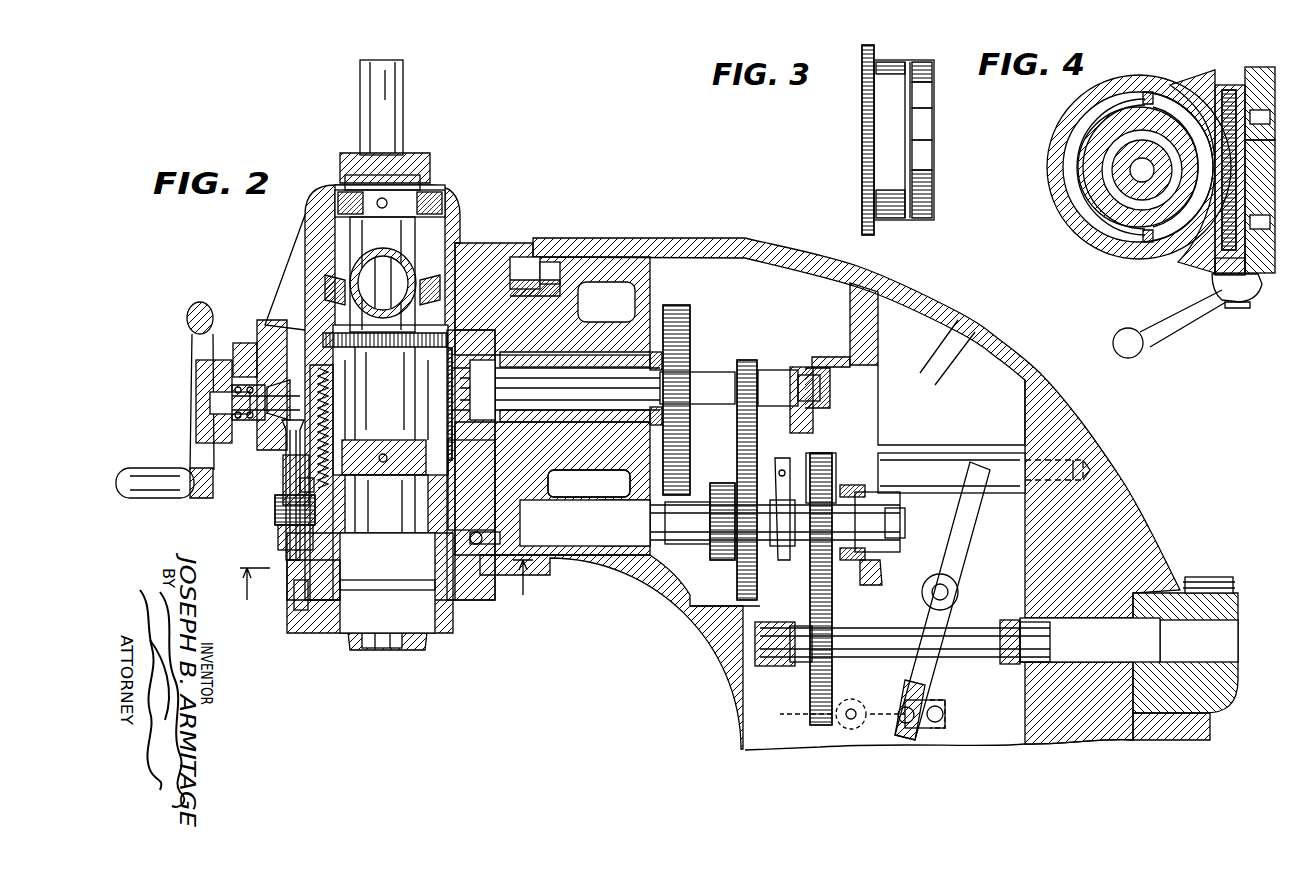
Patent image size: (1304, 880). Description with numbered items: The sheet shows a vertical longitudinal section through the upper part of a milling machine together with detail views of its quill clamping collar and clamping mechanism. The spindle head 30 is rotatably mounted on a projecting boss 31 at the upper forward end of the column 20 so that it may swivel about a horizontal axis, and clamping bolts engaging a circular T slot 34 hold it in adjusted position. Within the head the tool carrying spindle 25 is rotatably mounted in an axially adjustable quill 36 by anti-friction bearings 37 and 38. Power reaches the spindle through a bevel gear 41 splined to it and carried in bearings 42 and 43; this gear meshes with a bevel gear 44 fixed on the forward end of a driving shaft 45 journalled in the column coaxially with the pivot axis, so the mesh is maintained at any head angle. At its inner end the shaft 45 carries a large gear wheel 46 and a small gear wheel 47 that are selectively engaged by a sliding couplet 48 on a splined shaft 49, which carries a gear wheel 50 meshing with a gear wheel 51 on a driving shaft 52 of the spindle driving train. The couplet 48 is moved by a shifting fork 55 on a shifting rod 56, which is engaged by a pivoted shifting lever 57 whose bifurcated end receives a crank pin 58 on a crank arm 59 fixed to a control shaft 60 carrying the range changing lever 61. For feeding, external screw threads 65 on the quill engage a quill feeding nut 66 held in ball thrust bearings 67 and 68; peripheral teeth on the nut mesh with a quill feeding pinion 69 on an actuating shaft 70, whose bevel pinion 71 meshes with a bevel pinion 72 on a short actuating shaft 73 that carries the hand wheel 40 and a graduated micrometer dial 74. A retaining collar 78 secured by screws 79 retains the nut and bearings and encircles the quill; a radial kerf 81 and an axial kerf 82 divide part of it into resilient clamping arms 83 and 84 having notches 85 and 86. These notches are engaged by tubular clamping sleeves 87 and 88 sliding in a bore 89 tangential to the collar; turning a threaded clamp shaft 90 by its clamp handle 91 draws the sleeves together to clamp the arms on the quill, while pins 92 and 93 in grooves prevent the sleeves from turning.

In FIG. 2, the column 20 is at (945, 342).
In FIG. 2, the tool carrying spindle 25 is at (425, 643).
In FIG. 4, the tool carrying spindle 25 is at (1123, 177).
In FIG. 2, the spindle head 30 is at (264, 245).
In FIG. 4, the spindle head 30 is at (1050, 252).
In FIG. 2, the projecting boss 31 is at (490, 325).
In FIG. 2, the circular T slot 34 is at (528, 262).
In FIG. 2, the quill 36 is at (455, 618).
In FIG. 4, the quill 36 is at (1105, 128).
In FIG. 2, the anti-friction bearing 37 is at (420, 600).
In FIG. 2, the anti-friction bearing 38 is at (385, 310).
In FIG. 2, the hand wheel 40 is at (197, 306).
In FIG. 2, the bevel gear 41 is at (335, 347).
In FIG. 2, the bearing 42 is at (430, 295).
In FIG. 2, the bearing 43 is at (430, 226).
In FIG. 2, the bevel gear 44 is at (452, 400).
In FIG. 2, the driving shaft 45 is at (560, 392).
In FIG. 2, the gear wheel 46 is at (676, 312).
In FIG. 2, the gear wheel 47 is at (745, 360).
In FIG. 2, the sliding couplet 48 is at (728, 480).
In FIG. 2, the splined shaft 49 is at (678, 532).
In FIG. 2, the gear wheel 50 is at (818, 453).
In FIG. 2, the gear wheel 51 is at (832, 618).
In FIG. 2, the driving shaft 52 is at (862, 640).
In FIG. 2, the shifting fork 55 is at (786, 465).
In FIG. 2, the shifting rod 56 is at (910, 465).
In FIG. 2, the shifting lever 57 is at (955, 528).
In FIG. 2, the crank pin 58 is at (897, 738).
In FIG. 2, the crank arm 59 is at (938, 726).
In FIG. 2, the control shaft 60 is at (946, 714).
In FIG. 2, the range changing lever 61 is at (840, 736).
In FIG. 2, the external screw threads 65 is at (328, 398).
In FIG. 2, the quill feeding nut 66 is at (589, 483).
In FIG. 2, the ball thrust bearing 67 is at (300, 486).
In FIG. 2, the ball thrust bearing 68 is at (280, 536).
In FIG. 2, the quill feeding pinion 69 is at (275, 510).
In FIG. 2, the actuating shaft 70 is at (292, 470).
In FIG. 2, the bevel pinion 71 is at (295, 420).
In FIG. 2, the bevel pinion 72 is at (285, 388).
In FIG. 2, the short actuating shaft 73 is at (200, 400).
In FIG. 2, the graduated micrometer dial 74 is at (252, 345).
In FIG. 2, the retaining collar 78 is at (300, 570).
In FIG. 3, the retaining collar 78 is at (866, 128).
In FIG. 4, the retaining collar 78 is at (1070, 160).
In FIG. 2, the screws 79 is at (300, 608).
In FIG. 3, the kerf 81 is at (910, 96).
In FIG. 3, the axial kerf 82 is at (920, 140).
In FIG. 3, the clamping arm 83 is at (925, 90).
In FIG. 4, the clamping arm 83 is at (1147, 92).
In FIG. 3, the clamping arm 84 is at (925, 182).
In FIG. 4, the clamping arm 84 is at (1147, 242).
In FIG. 3, the notch 85 is at (925, 112).
In FIG. 4, the notch 85 is at (1162, 100).
In FIG. 3, the notch 86 is at (925, 168).
In FIG. 4, the notch 86 is at (1195, 240).
In FIG. 4, the clamping sleeve 87 is at (1205, 85).
In FIG. 4, the clamping sleeve 88 is at (1222, 262).
In FIG. 4, the bore 89 is at (1235, 85).
In FIG. 2, the clamp shaft 90 is at (500, 548).
In FIG. 4, the clamp shaft 90 is at (1255, 284).
In FIG. 4, the clamp handle 91 is at (1160, 330).
In FIG. 4, the pin 92 is at (1262, 108).
In FIG. 4, the pin 93 is at (1258, 230).